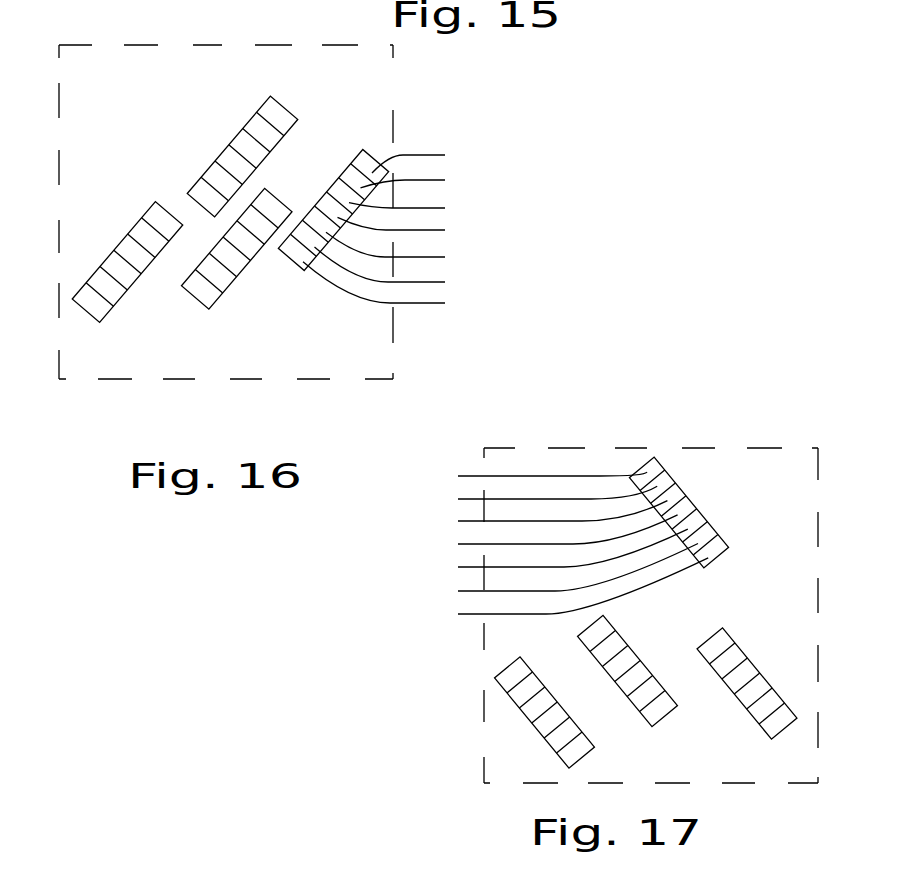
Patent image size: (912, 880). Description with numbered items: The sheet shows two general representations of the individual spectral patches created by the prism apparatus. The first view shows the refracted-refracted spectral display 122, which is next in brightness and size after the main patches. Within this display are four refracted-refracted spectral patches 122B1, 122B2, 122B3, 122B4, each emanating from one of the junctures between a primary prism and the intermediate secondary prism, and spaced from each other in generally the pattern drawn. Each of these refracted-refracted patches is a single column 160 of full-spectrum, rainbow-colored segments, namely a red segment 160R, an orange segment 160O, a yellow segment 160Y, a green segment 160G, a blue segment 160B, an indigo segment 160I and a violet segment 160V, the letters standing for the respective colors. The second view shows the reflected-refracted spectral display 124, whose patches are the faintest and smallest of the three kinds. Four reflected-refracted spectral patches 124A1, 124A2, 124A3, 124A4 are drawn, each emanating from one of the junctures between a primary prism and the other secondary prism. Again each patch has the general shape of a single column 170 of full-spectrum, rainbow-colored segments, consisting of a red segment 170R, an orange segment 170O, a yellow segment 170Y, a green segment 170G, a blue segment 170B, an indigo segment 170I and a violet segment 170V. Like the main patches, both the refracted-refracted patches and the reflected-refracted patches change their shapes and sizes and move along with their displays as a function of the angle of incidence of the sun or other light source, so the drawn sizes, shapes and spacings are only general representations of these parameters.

In FIG. 16, the refracted-refracted spectral display 122 is at (192, 44).
In FIG. 16, the refracted-refracted spectral patch 122B1 is at (262, 98).
In FIG. 16, the refracted-refracted spectral patch 122B2 is at (107, 317).
In FIG. 16, the refracted-refracted spectral patch 122B3 is at (372, 170).
In FIG. 16, the refracted-refracted spectral patch 122B4 is at (361, 303).
In FIG. 16, the column of full-spectrum segments 160 is at (198, 303).
In FIG. 16, the violet segment 160V is at (456, 158).
In FIG. 16, the indigo segment 160I is at (448, 181).
In FIG. 16, the blue segment 160B is at (445, 207).
In FIG. 16, the green segment 160G is at (441, 231).
In FIG. 16, the yellow segment 160Y is at (434, 250).
In FIG. 16, the orange segment 160O is at (429, 270).
In FIG. 16, the red segment 160R is at (422, 289).
In FIG. 17, the reflected-refracted spectral display 124 is at (647, 448).
In FIG. 17, the reflected-refracted spectral patch 124A1 is at (667, 478).
In FIG. 17, the reflected-refracted spectral patch 124A2 is at (555, 748).
In FIG. 17, the reflected-refracted spectral patch 124A3 is at (753, 720).
In FIG. 17, the reflected-refracted spectral patch 124A4 is at (593, 623).
In FIG. 17, the column of full-spectrum segments 170 is at (536, 512).
In FIG. 17, the violet segment 170V is at (506, 476).
In FIG. 17, the indigo segment 170I is at (511, 499).
In FIG. 17, the blue segment 170B is at (516, 518).
In FIG. 17, the green segment 170G is at (521, 536).
In FIG. 17, the yellow segment 170Y is at (526, 554).
In FIG. 17, the orange segment 170O is at (531, 574).
In FIG. 17, the red segment 170R is at (536, 592).